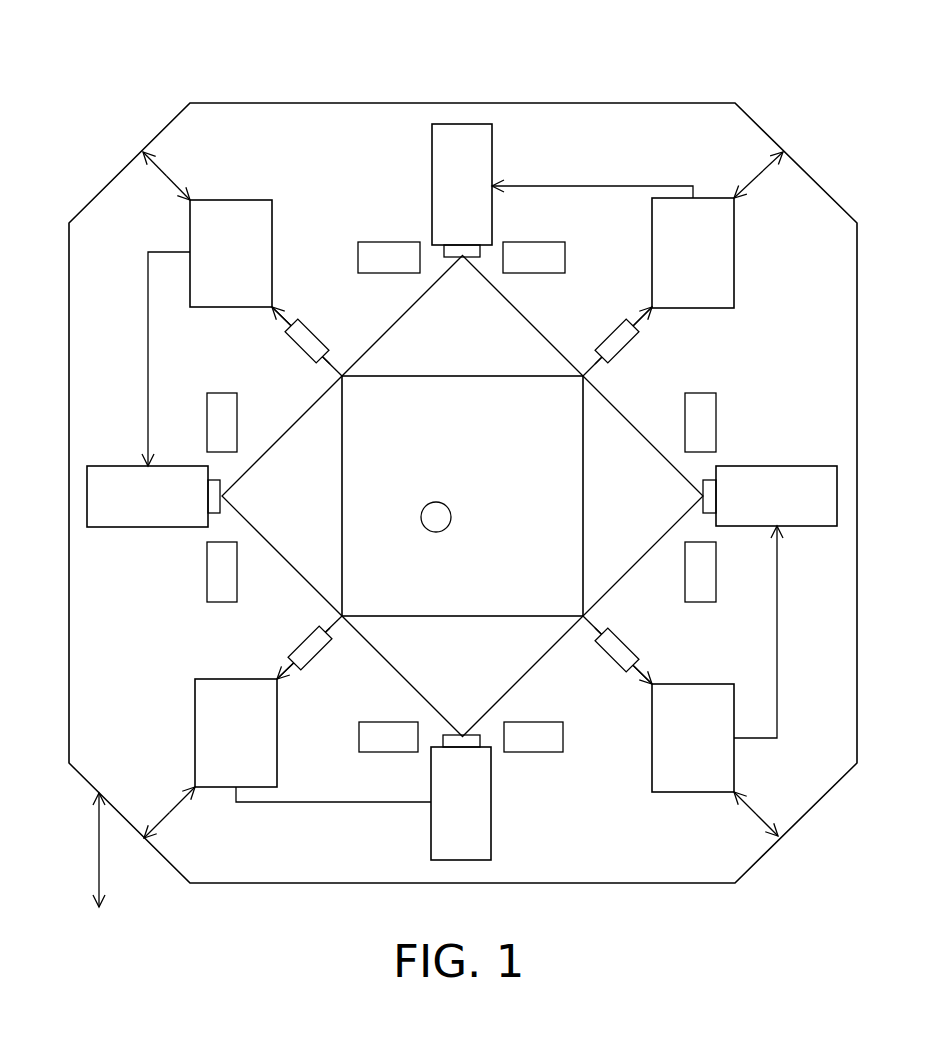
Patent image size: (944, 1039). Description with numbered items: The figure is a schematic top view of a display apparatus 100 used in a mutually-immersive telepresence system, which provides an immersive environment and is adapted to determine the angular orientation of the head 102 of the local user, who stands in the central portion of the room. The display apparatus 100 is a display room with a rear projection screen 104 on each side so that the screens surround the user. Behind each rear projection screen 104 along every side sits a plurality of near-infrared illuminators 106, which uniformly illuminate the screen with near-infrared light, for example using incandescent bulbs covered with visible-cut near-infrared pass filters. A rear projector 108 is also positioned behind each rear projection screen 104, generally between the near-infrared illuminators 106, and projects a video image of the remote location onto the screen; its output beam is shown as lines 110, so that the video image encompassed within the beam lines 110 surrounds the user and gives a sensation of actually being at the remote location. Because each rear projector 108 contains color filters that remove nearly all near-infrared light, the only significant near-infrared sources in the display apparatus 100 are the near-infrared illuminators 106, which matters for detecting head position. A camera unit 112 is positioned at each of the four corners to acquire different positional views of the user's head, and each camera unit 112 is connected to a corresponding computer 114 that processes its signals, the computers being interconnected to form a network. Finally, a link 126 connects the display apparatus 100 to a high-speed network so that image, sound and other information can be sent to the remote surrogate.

The display apparatus 100 is at (322, 85).
The head 102 is at (437, 532).
The rear projection screen 104 is at (405, 376).
The near-infrared illuminator 106 is at (392, 242).
The rear projector 108 is at (492, 151).
The beam lines 110 is at (388, 331).
The camera unit 112 is at (320, 340).
The computer 114 is at (272, 252).
The link 126 is at (97, 866).